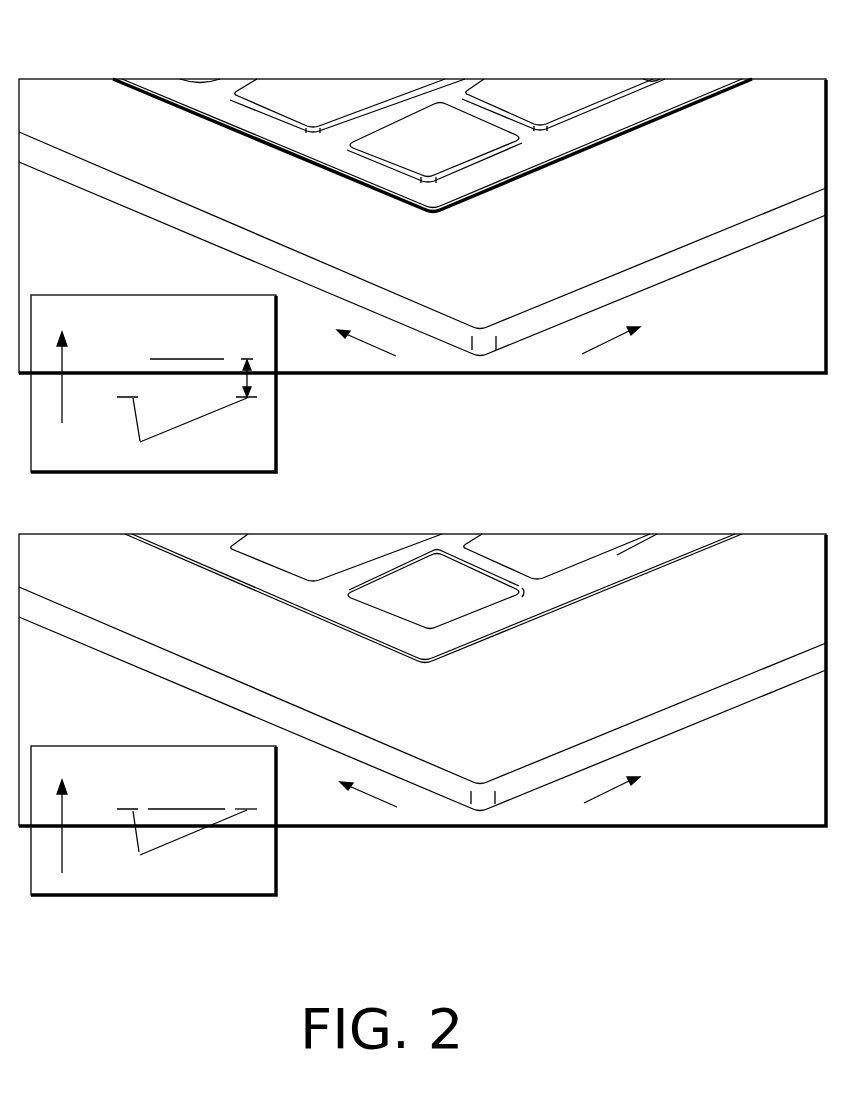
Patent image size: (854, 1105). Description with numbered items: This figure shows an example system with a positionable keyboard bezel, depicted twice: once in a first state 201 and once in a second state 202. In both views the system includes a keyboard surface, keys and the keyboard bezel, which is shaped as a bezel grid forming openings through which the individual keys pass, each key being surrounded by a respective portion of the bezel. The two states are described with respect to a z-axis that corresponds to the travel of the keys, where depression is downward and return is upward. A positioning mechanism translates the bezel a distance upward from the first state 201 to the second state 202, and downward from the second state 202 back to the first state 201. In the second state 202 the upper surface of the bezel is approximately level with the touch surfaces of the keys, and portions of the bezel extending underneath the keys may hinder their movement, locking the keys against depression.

The first state 201 is at (781, 343).
The second state 202 is at (793, 793).